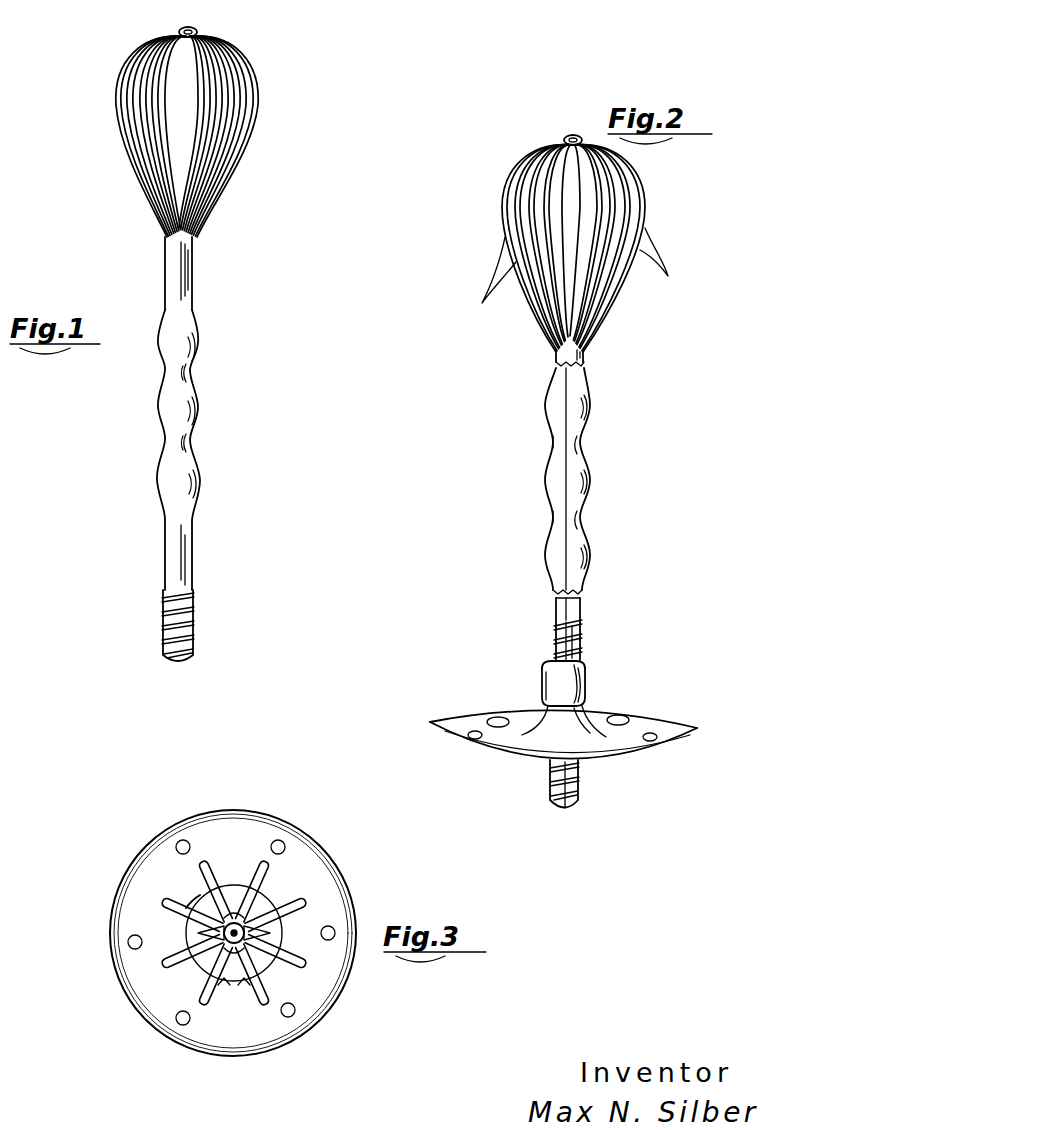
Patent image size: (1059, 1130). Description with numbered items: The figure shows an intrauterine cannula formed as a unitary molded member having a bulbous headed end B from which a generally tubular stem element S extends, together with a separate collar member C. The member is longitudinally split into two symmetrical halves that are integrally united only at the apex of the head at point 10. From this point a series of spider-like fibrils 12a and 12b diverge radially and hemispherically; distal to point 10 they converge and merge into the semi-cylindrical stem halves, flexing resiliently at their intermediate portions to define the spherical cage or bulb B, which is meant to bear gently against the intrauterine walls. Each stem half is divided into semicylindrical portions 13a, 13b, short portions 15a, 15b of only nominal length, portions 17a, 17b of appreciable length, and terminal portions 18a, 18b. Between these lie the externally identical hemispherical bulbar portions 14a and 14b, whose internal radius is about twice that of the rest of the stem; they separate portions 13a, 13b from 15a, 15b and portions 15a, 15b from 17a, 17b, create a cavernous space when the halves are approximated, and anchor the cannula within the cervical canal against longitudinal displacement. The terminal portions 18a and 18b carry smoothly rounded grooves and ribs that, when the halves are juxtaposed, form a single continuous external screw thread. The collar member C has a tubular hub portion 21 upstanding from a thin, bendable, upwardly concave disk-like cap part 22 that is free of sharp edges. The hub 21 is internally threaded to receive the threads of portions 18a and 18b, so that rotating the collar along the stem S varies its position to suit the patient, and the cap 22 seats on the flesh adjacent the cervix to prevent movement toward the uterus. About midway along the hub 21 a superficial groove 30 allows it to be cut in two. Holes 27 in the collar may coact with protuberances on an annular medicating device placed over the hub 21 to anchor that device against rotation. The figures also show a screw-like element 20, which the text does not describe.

In FIG. 1, the headed end apex point 10 is at (197, 30).
In FIG. 2, the headed end apex point 10 is at (563, 136).
In FIG. 3, the headed end apex point 10 is at (256, 914).
In FIG. 2, the fibrils 12a is at (560, 257).
In FIG. 3, the fibrils 12a is at (205, 860).
In FIG. 1, the fibrils 12b is at (238, 163).
In FIG. 2, the fibrils 12b is at (590, 260).
In FIG. 3, the fibrils 12b is at (266, 870).
In FIG. 2, the semicylindrical stem portion 13a is at (553, 354).
In FIG. 1, the semicylindrical stem portion 13b is at (183, 287).
In FIG. 2, the semicylindrical stem portion 13b is at (588, 356).
In FIG. 2, the bulbar stem portion 14a is at (545, 405).
In FIG. 3, the bulbar stem portion 14a is at (222, 988).
In FIG. 1, the bulbar stem portion 14b is at (199, 343).
In FIG. 2, the bulbar stem portion 14b is at (590, 406).
In FIG. 3, the bulbar stem portion 14b is at (245, 988).
In FIG. 2, the semicylindrical stem portion 15a is at (553, 442).
In FIG. 1, the semicylindrical stem portion 15b is at (191, 373).
In FIG. 2, the semicylindrical stem portion 15b is at (580, 443).
In FIG. 2, the semicylindrical stem portion 17a is at (560, 603).
In FIG. 1, the semicylindrical stem portion 17b is at (193, 528).
In FIG. 2, the semicylindrical stem portion 17b is at (584, 606).
In FIG. 2, the threaded terminal stem portion 18a is at (558, 638).
In FIG. 1, the threaded terminal stem portion 18b is at (194, 596).
In FIG. 2, the threaded terminal stem portion 18b is at (585, 638).
In FIG. 2, the screw 20 is at (568, 812).
In FIG. 2, the hub portion 21 is at (577, 690).
In FIG. 2, the disk-like cap part 22 is at (565, 734).
In FIG. 2, the holes 27 is at (495, 720).
In FIG. 3, the holes 27 is at (280, 845).
In FIG. 2, the superficial groove 30 is at (532, 696).
In FIG. 3, the bulbous headed end B is at (152, 896).
In FIG. 2, the collar member C is at (505, 756).
In FIG. 3, the collar member C is at (108, 905).
In FIG. 3, the tubular stem element S is at (194, 890).